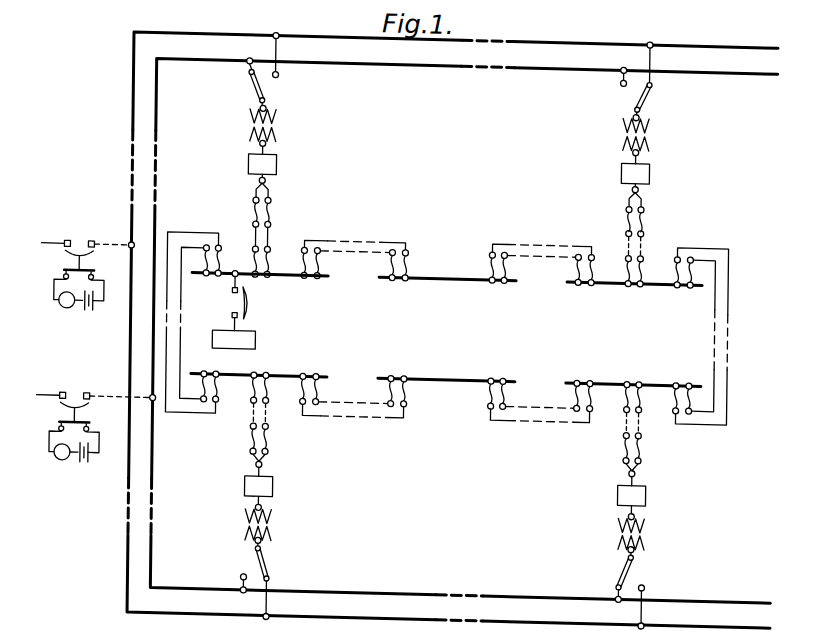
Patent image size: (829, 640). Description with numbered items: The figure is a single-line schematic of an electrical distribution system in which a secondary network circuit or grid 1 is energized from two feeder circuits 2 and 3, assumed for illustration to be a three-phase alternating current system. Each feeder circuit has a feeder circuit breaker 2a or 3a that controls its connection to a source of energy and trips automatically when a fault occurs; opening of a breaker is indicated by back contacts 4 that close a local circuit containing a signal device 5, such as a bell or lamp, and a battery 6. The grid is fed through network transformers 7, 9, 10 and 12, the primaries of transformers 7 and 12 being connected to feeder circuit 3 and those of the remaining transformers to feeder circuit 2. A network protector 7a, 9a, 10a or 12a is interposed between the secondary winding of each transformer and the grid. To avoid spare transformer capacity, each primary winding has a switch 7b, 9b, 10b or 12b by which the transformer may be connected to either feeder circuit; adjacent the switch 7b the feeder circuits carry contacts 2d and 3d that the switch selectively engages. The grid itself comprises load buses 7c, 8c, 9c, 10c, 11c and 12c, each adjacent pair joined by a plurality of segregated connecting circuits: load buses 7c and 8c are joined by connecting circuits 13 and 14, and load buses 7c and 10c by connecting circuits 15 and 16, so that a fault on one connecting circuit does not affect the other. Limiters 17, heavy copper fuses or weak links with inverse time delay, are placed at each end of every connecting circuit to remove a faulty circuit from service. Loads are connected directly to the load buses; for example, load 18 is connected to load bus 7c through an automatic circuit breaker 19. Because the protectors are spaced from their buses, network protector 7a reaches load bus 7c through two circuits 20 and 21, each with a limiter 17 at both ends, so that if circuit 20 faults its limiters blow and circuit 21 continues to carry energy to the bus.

The secondary network circuit or grid 1 is at (545, 337).
The feeder circuit 2 is at (96, 241).
The feeder circuit breaker 2a is at (66, 252).
The contact 2d is at (280, 71).
The feeder circuit 3 is at (93, 393).
The feeder circuit breaker 3a is at (63, 404).
The contact 3d is at (249, 71).
The back contacts 4 is at (97, 272).
The signal device 5 is at (63, 306).
The battery 6 is at (95, 306).
The network transformer 7 is at (277, 133).
The network protector 7a is at (278, 162).
The switch 7b is at (261, 84).
The load bus 7c is at (288, 272).
The load bus 8c is at (433, 273).
The network transformer 9 is at (650, 128).
The network protector 9a is at (652, 161).
The switch 9b is at (646, 84).
The load bus 9c is at (615, 273).
The network transformer 10 is at (251, 524).
The network protector 10a is at (249, 483).
The switch 10b is at (271, 561).
The load bus 10c is at (231, 370).
The load bus 11c is at (447, 370).
The network transformer 12 is at (651, 524).
The network protector 12a is at (652, 481).
The switch 12b is at (631, 560).
The load bus 12c is at (609, 370).
The connecting circuit 13 is at (392, 235).
The connecting circuit 14 is at (328, 235).
The connecting circuit 15 is at (172, 367).
The connecting circuit 16 is at (185, 353).
The limiter 17 is at (289, 228).
The load 18 is at (261, 338).
The automatic circuit breaker 19 is at (252, 302).
The circuit 20 is at (256, 236).
The circuit 21 is at (271, 236).